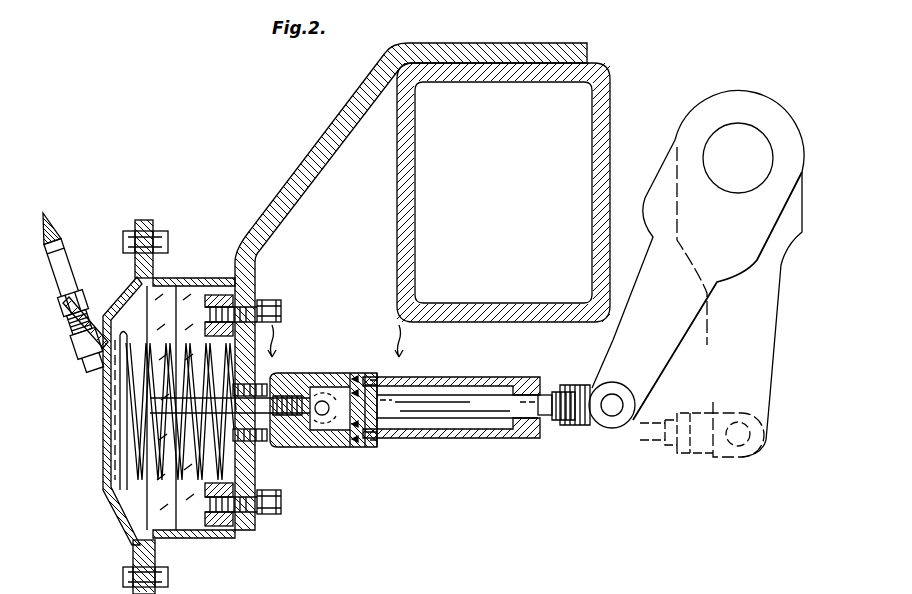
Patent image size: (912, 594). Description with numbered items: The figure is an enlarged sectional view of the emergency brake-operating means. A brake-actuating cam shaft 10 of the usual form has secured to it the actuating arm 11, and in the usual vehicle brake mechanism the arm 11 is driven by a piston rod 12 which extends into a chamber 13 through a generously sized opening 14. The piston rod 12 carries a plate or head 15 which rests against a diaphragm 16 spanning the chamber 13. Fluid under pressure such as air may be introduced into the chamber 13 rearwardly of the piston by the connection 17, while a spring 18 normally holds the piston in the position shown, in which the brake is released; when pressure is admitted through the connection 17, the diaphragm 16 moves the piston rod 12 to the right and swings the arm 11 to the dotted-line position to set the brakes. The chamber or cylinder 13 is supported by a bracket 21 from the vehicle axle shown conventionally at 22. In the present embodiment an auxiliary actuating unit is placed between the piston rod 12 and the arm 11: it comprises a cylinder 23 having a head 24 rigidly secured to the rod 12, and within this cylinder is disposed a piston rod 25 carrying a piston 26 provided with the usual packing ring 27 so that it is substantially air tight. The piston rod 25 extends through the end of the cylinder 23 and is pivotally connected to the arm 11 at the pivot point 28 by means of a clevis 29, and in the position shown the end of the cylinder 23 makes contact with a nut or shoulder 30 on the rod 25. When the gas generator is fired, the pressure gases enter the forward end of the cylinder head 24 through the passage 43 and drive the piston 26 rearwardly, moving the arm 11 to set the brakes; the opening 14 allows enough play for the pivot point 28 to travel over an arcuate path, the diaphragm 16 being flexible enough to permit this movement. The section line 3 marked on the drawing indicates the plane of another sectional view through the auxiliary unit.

The section line / bolt 3 is at (304, 410).
The brake-actuating cam shaft 10 is at (738, 158).
The actuating arm 11 is at (718, 255).
The piston rod 12 is at (255, 414).
The chamber 13 is at (163, 531).
The opening 14 is at (232, 432).
The plate or head 15 is at (118, 409).
The diaphragm 16 is at (112, 458).
The connection 17 is at (78, 275).
The spring 18 is at (187, 332).
The bracket 21 is at (288, 176).
The vehicle axle 22 is at (413, 190).
The cylinder 23 is at (438, 385).
The cylinder head 24 is at (313, 376).
The piston rod 25 is at (465, 416).
The piston 26 is at (371, 441).
The packing ring 27 is at (355, 440).
The pivot point 28 is at (612, 403).
The clevis 29 is at (588, 422).
The nut or shoulder 30 is at (543, 398).
The passage 43 is at (321, 414).